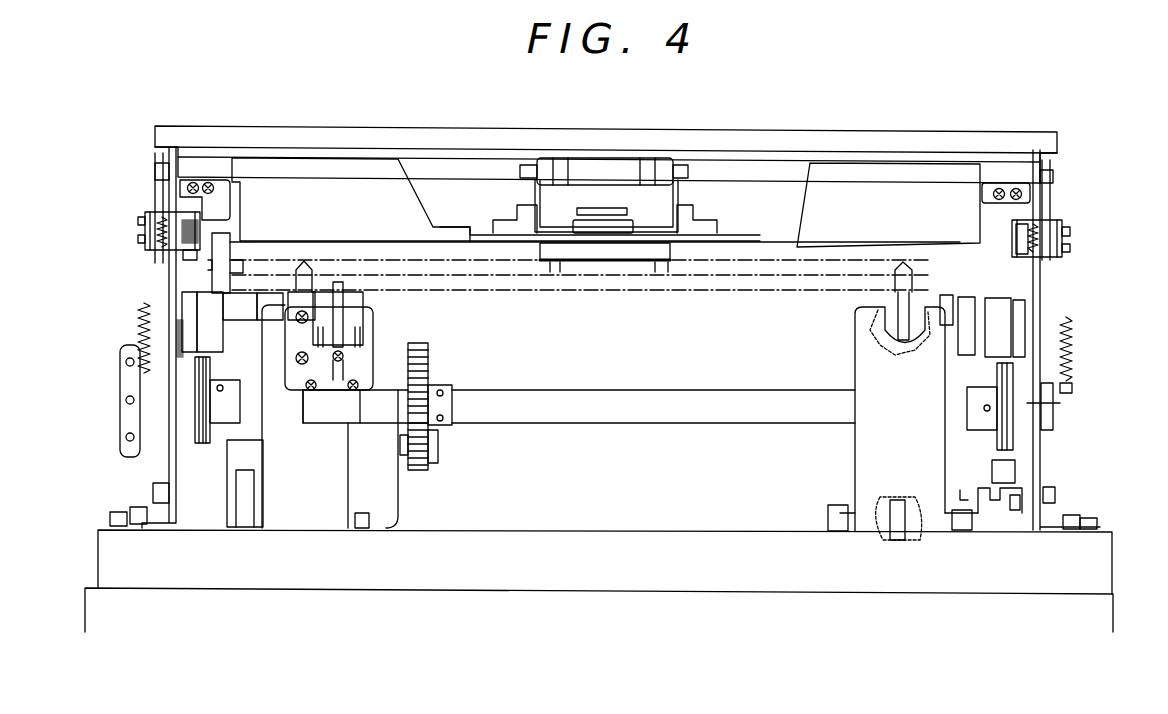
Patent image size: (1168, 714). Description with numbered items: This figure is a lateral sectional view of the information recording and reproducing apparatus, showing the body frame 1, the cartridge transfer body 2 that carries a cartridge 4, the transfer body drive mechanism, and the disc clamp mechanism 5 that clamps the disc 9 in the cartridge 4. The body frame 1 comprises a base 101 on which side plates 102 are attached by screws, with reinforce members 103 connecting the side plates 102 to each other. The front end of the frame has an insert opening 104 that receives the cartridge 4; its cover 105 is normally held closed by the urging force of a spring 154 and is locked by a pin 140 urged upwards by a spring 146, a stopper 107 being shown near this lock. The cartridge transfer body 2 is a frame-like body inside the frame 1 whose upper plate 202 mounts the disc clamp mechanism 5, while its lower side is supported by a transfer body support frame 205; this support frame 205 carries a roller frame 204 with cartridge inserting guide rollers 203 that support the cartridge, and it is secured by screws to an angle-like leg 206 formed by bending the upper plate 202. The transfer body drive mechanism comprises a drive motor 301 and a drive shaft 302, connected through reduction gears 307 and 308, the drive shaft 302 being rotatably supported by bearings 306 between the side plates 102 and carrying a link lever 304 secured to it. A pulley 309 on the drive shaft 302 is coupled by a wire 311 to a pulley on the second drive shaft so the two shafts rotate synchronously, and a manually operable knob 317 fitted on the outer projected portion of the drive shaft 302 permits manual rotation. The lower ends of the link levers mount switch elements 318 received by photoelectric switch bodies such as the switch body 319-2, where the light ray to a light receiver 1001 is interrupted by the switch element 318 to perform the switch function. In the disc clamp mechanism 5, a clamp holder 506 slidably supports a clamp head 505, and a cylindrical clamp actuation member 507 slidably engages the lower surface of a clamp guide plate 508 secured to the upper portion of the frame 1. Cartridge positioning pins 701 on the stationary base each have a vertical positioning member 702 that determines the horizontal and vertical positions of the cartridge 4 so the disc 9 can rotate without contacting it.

The body frame 1 is at (116, 501).
The cartridge transfer body 2 is at (1000, 282).
The cartridge 4 is at (611, 293).
The disc clamp mechanism 5 is at (605, 162).
The disc 9 is at (497, 276).
The base 101 is at (575, 589).
The side plate 102 is at (169, 264).
The reinforce member 103 is at (313, 163).
The insert opening 104 is at (222, 197).
The cover 105 is at (360, 192).
The stopper bolt 107 is at (198, 232).
The pin 140 is at (158, 186).
The spring 146 is at (1032, 251).
The spring 154 is at (145, 214).
The upper plate 202 is at (735, 236).
The cartridge inserting guide roller 203 is at (280, 296).
The roller frame 204 is at (242, 318).
The transfer body support frame 205 is at (187, 305).
The angle-like leg 206 is at (955, 322).
The drive motor 301 is at (398, 520).
The drive shaft 302 is at (622, 424).
The link lever 304 is at (180, 296).
The bearing 306 is at (210, 417).
The reduction gear 307 is at (425, 471).
The reduction gear 308 is at (428, 369).
The pulley 309 is at (225, 470).
The wire 311 is at (200, 440).
The manually operable knob 317 is at (120, 385).
The switch element 318 is at (995, 486).
The photoelectric switch body 319-2 is at (1012, 500).
The clamp head 505 is at (553, 252).
The clamp holder 506 is at (630, 208).
The clamp actuation member 507 is at (597, 160).
The clamp guide plate 508 is at (487, 129).
The cartridge positioning pin 701 is at (305, 266).
The vertical positioning member 702 is at (310, 297).
The light receiver 1001 is at (978, 494).